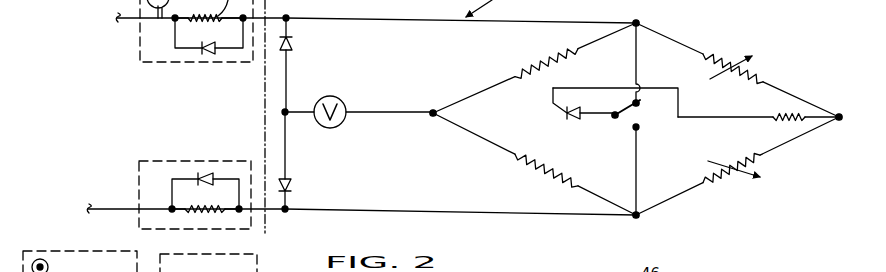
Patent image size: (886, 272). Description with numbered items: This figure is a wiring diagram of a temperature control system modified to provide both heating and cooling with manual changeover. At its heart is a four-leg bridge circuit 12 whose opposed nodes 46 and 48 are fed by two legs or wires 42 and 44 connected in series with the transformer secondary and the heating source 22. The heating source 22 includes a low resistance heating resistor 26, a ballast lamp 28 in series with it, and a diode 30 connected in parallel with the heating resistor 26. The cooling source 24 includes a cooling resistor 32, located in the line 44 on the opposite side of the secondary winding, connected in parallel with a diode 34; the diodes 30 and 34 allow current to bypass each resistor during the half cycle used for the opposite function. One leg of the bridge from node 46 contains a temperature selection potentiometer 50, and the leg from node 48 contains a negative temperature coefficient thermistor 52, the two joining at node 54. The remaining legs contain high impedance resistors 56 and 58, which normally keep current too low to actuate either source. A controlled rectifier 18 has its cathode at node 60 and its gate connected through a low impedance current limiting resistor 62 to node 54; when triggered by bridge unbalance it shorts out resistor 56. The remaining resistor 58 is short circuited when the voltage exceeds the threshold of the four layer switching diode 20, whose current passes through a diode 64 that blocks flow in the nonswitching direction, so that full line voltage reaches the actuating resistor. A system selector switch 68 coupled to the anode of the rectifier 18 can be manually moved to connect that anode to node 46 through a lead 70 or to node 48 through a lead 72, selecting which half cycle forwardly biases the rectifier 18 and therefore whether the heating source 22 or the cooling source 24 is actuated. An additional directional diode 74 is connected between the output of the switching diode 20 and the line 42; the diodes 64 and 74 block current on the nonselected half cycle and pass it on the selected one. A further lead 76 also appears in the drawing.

The bridge circuit 12 is at (697, 44).
The rectifier 18 is at (573, 120).
The switching diode 20 is at (335, 97).
The heating source 22 is at (42, 250).
The cooling source 24 is at (147, 160).
The heating resistor 26 is at (114, 265).
The ballast lamp 28 is at (58, 261).
The diode 30 is at (212, 54).
The cooling resistor 32 is at (223, 205).
The diode 34 is at (208, 172).
The wire 42 is at (383, 20).
The wire 44 is at (392, 209).
The node 46 is at (638, 22).
The node 48 is at (638, 217).
The potentiometer 50 is at (760, 70).
The thermistor 52 is at (725, 170).
The node 54 is at (839, 121).
The resistor 56 is at (550, 68).
The resistor 58 is at (548, 180).
The node 60 is at (430, 120).
The resistor 62 is at (775, 120).
The diode 64 is at (292, 186).
The system selector switch 68 is at (642, 113).
The lead 70 is at (637, 70).
The lead 72 is at (638, 163).
The directional diode 74 is at (292, 43).
The conductor 76 is at (528, 271).